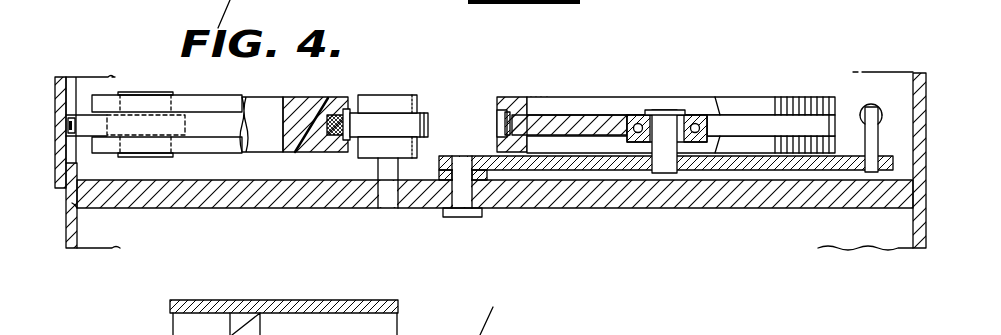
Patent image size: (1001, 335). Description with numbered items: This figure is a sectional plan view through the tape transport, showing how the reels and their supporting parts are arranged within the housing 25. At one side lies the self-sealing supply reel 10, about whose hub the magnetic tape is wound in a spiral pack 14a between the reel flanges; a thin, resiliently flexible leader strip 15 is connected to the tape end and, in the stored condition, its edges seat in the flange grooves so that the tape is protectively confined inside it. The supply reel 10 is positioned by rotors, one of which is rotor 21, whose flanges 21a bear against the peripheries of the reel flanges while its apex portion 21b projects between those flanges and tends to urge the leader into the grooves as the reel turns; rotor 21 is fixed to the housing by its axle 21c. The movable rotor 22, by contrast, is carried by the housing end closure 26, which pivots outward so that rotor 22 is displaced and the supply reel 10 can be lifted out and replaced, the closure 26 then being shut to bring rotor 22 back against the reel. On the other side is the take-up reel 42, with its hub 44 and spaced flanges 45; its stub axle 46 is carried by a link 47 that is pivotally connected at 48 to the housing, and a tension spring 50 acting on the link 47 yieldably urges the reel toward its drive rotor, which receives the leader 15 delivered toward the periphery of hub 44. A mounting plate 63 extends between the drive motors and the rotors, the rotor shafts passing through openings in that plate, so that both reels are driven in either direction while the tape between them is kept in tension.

The supply reel 10 is at (270, 156).
The spiral pack 14a is at (327, 120).
The leader strip 15 is at (328, 137).
The rotor 21 is at (419, 91).
The rotor flanges 21a is at (373, 145).
The apex portion 21b is at (430, 120).
The axle 21c is at (395, 198).
The rotor 22 is at (133, 90).
The housing 25 is at (55, 248).
The housing end closure 26 is at (55, 88).
The take-up reel 42 is at (769, 88).
The hub 44 is at (573, 113).
The flanges 45 is at (502, 98).
The stub axle 46 is at (663, 127).
The link 47 is at (570, 163).
The pivot connection 48 is at (465, 217).
The tension spring 50 is at (871, 106).
The mounting plate 63 is at (728, 197).